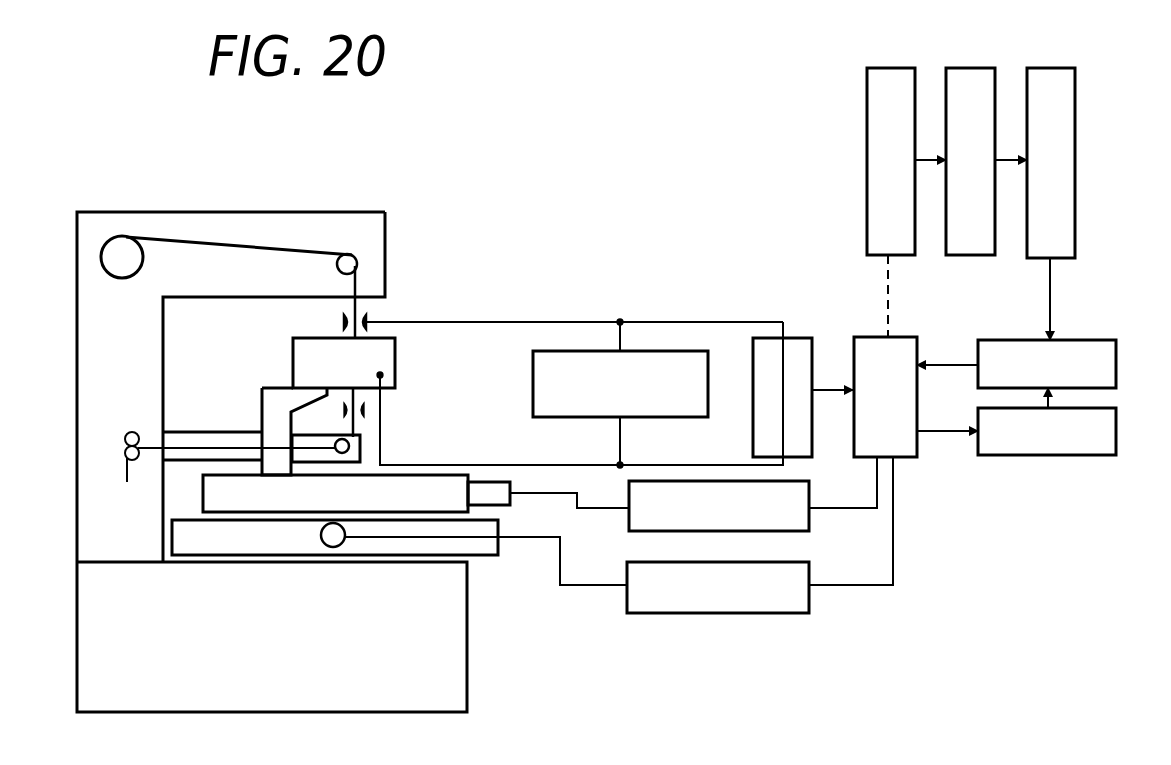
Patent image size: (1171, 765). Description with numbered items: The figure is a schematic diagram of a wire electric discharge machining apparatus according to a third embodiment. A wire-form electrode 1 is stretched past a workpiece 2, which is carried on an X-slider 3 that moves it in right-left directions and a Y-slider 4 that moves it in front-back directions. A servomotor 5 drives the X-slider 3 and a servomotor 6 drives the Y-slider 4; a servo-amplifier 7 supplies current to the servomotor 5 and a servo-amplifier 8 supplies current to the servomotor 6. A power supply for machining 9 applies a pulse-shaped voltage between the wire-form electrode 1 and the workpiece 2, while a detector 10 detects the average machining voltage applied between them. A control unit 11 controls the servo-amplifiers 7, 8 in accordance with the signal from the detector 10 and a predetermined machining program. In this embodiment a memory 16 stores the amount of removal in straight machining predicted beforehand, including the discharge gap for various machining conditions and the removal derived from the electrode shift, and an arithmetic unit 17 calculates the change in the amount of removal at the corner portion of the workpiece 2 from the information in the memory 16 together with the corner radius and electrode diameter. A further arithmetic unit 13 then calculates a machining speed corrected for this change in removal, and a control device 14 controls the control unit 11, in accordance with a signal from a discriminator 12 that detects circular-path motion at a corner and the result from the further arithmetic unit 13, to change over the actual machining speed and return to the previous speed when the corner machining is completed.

The wire-form electrode 1 is at (357, 279).
The workpiece 2 is at (396, 357).
The X-slider 3 is at (208, 495).
The Y-slider 4 is at (265, 545).
The servomotor 5 is at (512, 501).
The servomotor 6 is at (333, 547).
The servo-amplifier 7 is at (810, 522).
The servo-amplifier 8 is at (810, 603).
The power supply for machining 9 is at (709, 373).
The detector 10 is at (803, 337).
The control unit 11 is at (918, 349).
The discriminator 12 is at (1118, 425).
The further arithmetic unit 13 is at (1055, 67).
The control device 14 is at (1118, 357).
The memory 16 is at (893, 67).
The arithmetic unit 17 is at (975, 67).